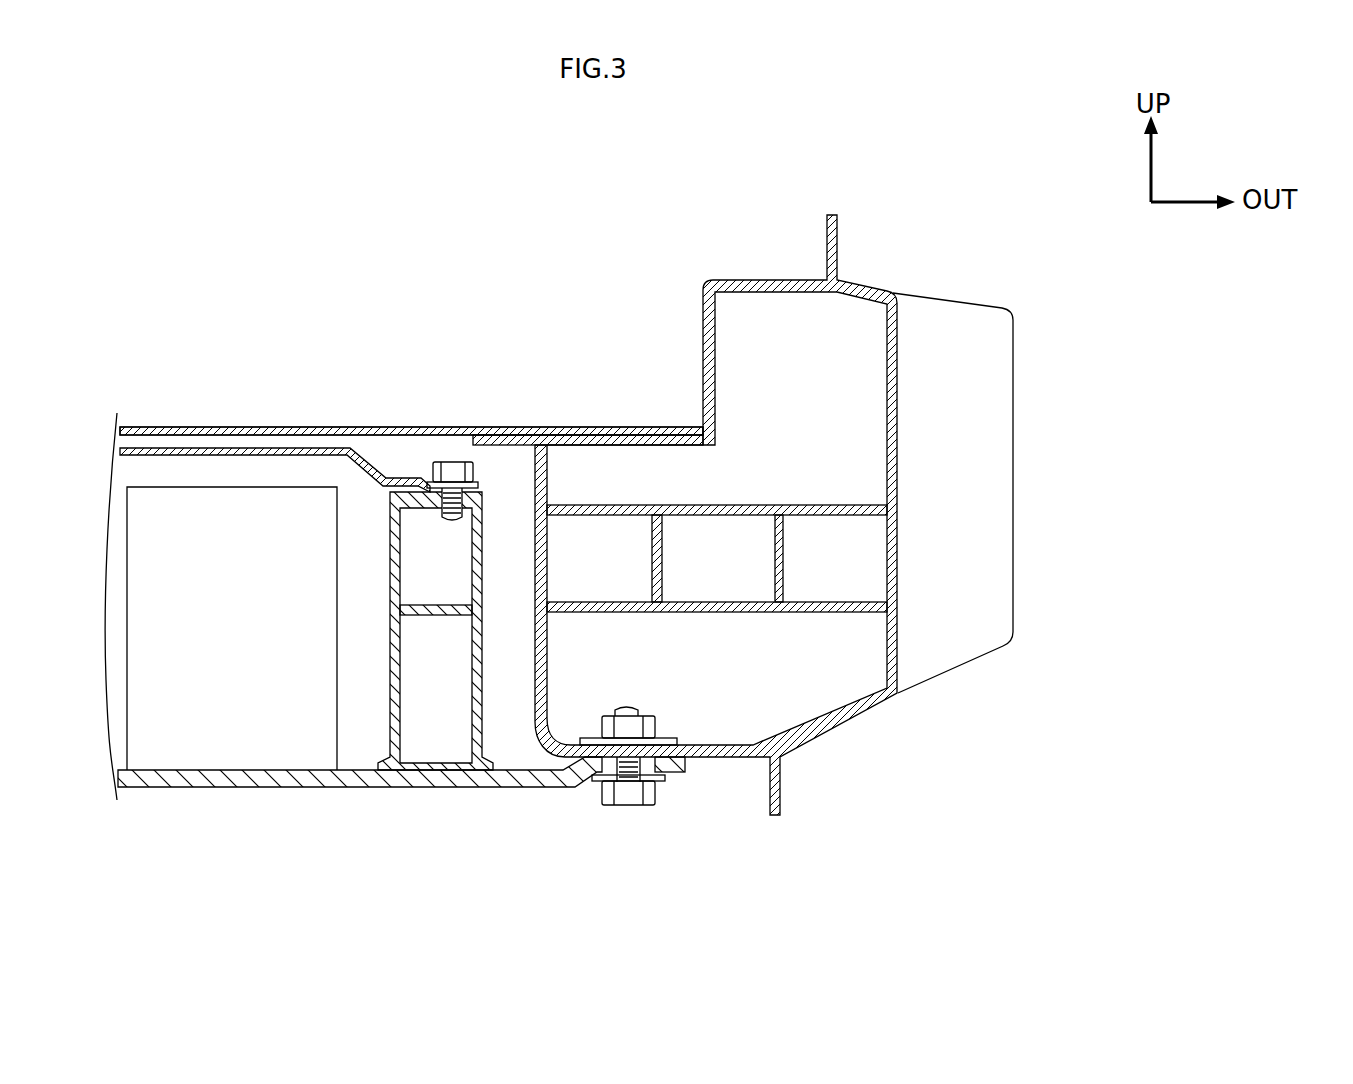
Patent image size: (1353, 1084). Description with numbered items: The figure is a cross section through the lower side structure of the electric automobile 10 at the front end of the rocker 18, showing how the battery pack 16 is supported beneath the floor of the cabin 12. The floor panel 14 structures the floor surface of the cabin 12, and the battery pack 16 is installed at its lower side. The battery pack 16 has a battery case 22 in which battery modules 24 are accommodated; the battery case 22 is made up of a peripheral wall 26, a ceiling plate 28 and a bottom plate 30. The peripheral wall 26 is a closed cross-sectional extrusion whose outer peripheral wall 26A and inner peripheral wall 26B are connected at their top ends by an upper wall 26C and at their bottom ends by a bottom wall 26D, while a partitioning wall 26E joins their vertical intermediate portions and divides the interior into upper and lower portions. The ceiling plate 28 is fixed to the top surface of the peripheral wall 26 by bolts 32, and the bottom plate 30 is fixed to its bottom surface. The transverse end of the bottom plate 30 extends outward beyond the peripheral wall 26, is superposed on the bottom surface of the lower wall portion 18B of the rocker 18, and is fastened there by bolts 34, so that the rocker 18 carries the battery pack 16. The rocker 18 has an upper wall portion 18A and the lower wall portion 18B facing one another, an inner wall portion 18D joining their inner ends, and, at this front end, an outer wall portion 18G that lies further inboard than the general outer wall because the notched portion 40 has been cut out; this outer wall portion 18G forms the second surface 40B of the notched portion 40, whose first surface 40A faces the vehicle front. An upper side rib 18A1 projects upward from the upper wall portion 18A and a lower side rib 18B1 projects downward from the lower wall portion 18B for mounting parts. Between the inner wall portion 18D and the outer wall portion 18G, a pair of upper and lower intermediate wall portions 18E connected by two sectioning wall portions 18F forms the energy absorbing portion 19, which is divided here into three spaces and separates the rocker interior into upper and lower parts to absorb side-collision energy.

The electric automobile 10 is at (245, 264).
The cabin 12 is at (332, 290).
The floor panel 14 is at (430, 427).
The battery pack 16 is at (317, 816).
The rocker 18 is at (905, 710).
The upper wall portion 18A is at (865, 278).
The upper side rib 18A1 is at (825, 247).
The lower wall portion 18B is at (832, 726).
The lower side rib 18B1 is at (770, 783).
The inner wall portion 18D is at (547, 477).
The intermediate wall portion 18E is at (850, 503).
The sectioning wall portion 18F is at (648, 570).
The outer wall portion 18G is at (900, 565).
The energy absorbing portion 19 is at (729, 496).
The battery case 22 is at (153, 786).
The battery module 24 is at (170, 497).
The peripheral wall 26 is at (486, 720).
The outer peripheral wall 26A is at (483, 533).
The inner peripheral wall 26B is at (390, 560).
The upper wall 26C is at (403, 492).
The bottom wall 26D is at (437, 770).
The partitioning wall 26E is at (433, 617).
The ceiling plate 28 is at (240, 450).
The bottom plate 30 is at (228, 787).
The bolt 32 is at (453, 462).
The bolt 34 is at (630, 807).
The notched portion 40 is at (1029, 493).
The first surface 40A is at (984, 443).
The second surface 40B is at (898, 537).